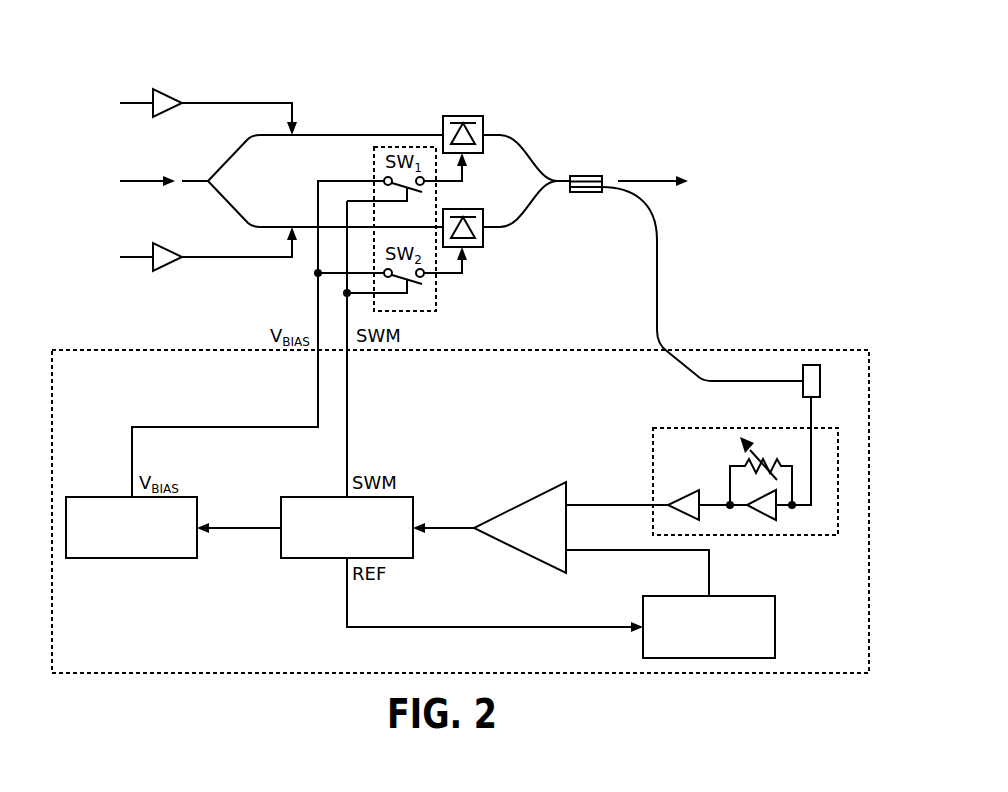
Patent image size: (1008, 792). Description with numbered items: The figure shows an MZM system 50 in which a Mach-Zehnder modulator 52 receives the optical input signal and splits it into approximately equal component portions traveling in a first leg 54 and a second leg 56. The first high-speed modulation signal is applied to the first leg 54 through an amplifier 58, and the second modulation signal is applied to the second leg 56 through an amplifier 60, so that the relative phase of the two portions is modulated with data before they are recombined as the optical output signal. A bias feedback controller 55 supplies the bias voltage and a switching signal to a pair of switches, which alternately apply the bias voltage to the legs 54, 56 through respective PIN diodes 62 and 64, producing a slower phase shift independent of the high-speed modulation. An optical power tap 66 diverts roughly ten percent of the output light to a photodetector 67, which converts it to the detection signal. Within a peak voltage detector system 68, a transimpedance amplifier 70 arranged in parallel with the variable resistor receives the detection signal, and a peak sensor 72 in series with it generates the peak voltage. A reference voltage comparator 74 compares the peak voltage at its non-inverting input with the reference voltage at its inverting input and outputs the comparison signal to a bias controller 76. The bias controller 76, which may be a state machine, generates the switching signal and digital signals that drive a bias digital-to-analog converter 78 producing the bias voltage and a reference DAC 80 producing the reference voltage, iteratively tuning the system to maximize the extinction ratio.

The MZM system 50 is at (131, 51).
The Mach-Zehnder modulator 52 is at (586, 117).
The first leg 54 is at (231, 161).
The bias feedback controller 55 is at (128, 350).
The second leg 56 is at (231, 203).
The amplifier 58 is at (172, 96).
The amplifier 60 is at (172, 267).
The PIN diode 62 is at (446, 116).
The PIN diode 64 is at (482, 246).
The optical power tap 66 is at (584, 192).
The photodetector 67 is at (810, 365).
The peak voltage detector system 68 is at (703, 480).
The transimpedance amplifier 70 is at (778, 520).
The peak sensor 72 is at (700, 520).
The reference voltage comparator 74 is at (535, 497).
The bias controller 76 is at (320, 558).
The bias digital-to-analog converter 78 is at (135, 558).
The reference DAC 80 is at (668, 596).